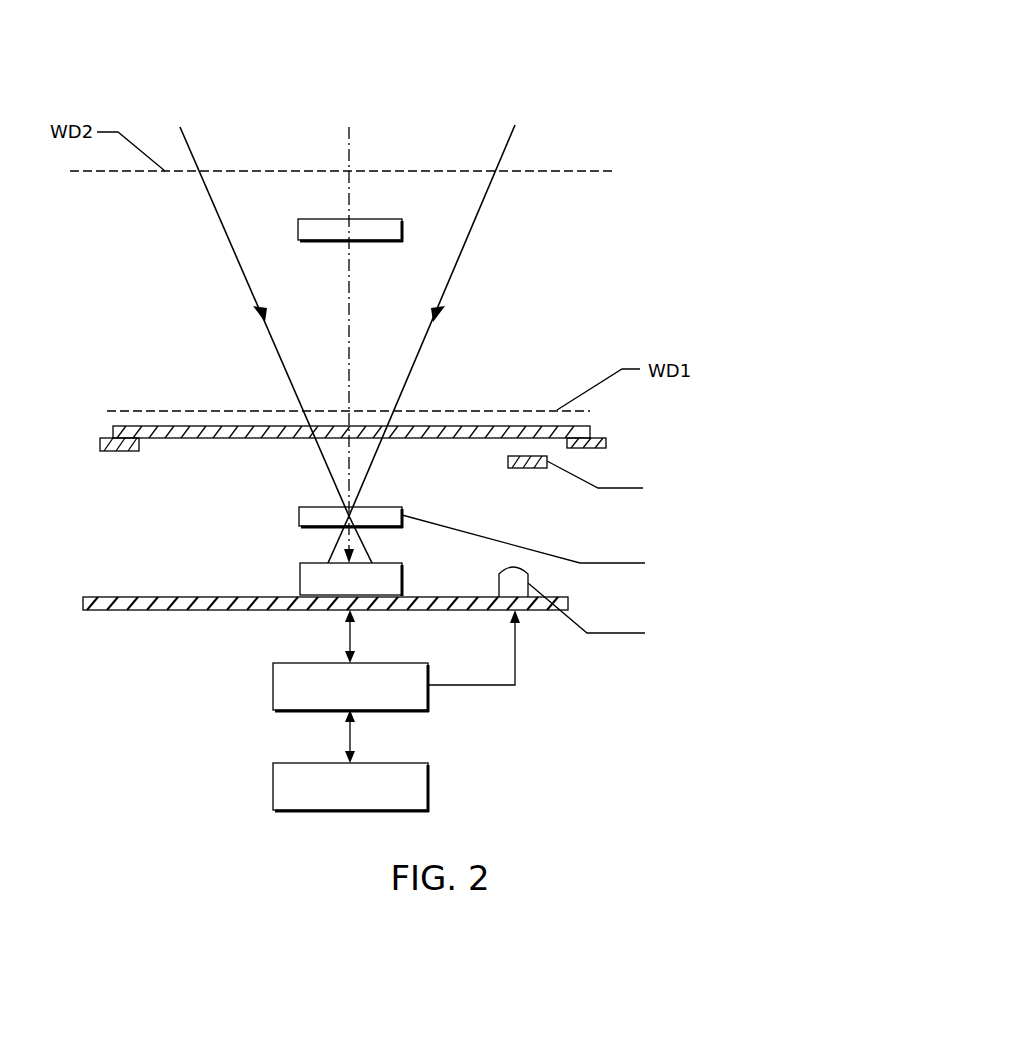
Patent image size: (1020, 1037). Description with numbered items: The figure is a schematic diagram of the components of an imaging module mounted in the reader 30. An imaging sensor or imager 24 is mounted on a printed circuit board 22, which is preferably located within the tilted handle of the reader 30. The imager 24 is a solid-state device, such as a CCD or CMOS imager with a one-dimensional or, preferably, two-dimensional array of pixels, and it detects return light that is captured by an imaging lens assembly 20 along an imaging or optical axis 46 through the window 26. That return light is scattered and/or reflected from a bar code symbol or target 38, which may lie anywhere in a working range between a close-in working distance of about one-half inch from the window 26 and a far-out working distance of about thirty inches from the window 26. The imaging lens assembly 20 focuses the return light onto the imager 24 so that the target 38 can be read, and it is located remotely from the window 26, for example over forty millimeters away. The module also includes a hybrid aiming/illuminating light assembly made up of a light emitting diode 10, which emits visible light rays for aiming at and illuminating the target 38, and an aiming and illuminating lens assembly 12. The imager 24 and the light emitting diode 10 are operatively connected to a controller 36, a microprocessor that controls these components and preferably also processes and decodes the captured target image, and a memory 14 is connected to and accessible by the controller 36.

The reader 30 is at (678, 40).
The imaging or optical axis 46 is at (349, 148).
The target 38 is at (298, 230).
The window 26 is at (113, 431).
The aiming and illuminating lens assembly 12 is at (508, 461).
The imaging lens assembly 20 is at (299, 516).
The imager 24 is at (300, 580).
The light emitting diode 10 is at (499, 582).
The printed circuit board 22 is at (150, 611).
The controller 36 is at (273, 687).
The memory 14 is at (273, 787).